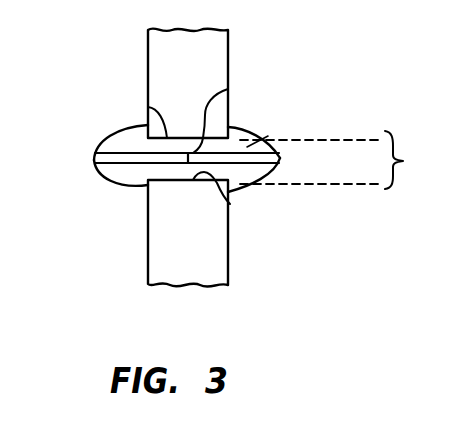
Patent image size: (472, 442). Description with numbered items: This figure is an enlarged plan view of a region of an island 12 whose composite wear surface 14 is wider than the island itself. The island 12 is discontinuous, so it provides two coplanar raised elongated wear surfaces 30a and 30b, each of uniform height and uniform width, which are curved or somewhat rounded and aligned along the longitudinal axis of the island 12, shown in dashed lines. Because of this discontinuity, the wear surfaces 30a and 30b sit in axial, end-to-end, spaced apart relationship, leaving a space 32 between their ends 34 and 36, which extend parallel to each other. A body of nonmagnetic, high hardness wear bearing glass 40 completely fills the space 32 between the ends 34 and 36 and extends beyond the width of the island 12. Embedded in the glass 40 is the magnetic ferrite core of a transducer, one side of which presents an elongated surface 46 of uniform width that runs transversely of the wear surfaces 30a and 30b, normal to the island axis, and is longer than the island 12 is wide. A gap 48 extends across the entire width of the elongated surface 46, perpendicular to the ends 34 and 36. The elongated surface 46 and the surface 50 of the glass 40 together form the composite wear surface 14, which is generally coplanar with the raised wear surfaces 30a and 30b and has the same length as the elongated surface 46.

The island 12 is at (128, 59).
The composite wear surface 14 is at (97, 141).
The raised elongated wear surface 30a is at (212, 55).
The raised elongated wear surface 30b is at (212, 248).
The space 32 is at (340, 160).
The end 34 is at (148, 106).
The end 36 is at (230, 204).
The glass 40 is at (99, 164).
The elongated surface 46 is at (145, 163).
The gap 48 is at (228, 89).
The surface of the body of glass 50 is at (258, 138).